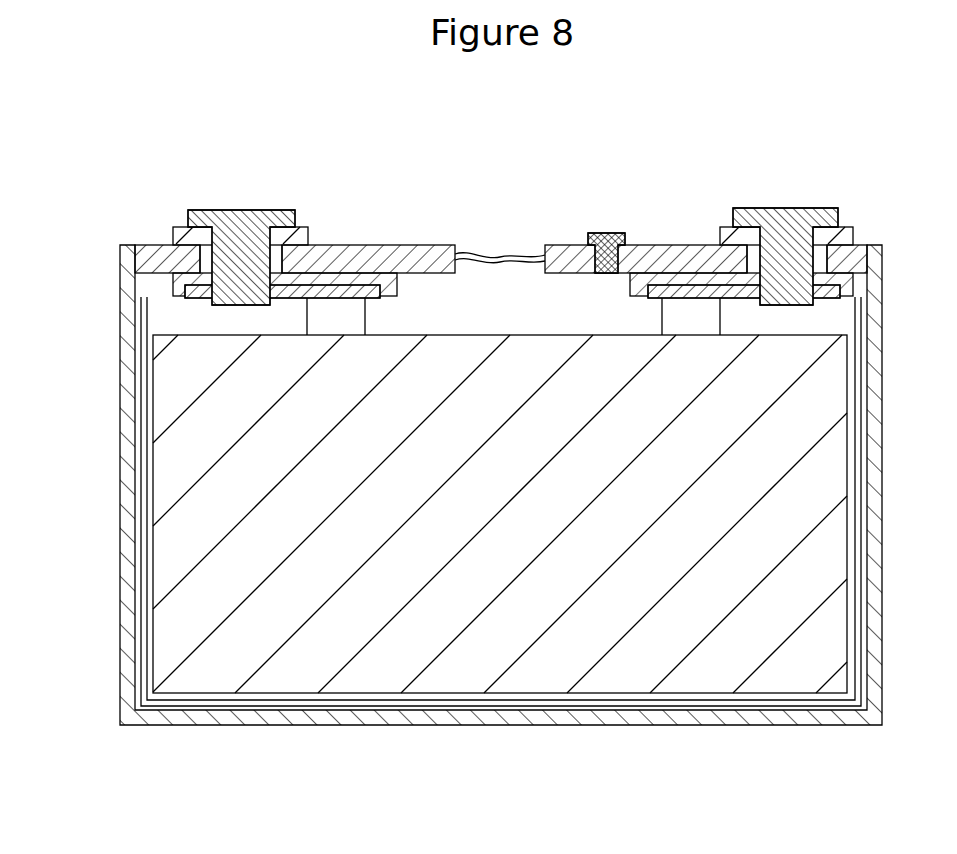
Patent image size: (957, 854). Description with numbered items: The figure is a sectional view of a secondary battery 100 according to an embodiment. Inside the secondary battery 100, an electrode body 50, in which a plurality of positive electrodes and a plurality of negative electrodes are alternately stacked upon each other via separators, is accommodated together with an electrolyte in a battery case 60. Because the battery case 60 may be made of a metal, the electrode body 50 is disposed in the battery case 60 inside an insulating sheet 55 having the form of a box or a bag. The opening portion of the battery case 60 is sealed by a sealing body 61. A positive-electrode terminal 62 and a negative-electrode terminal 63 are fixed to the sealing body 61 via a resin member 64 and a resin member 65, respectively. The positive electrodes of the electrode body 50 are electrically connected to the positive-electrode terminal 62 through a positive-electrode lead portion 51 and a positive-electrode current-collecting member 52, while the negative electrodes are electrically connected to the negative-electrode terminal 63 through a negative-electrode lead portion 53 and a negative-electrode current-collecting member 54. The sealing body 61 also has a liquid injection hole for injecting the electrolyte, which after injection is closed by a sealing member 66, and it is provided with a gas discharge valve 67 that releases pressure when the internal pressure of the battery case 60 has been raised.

The secondary battery 100 is at (882, 176).
The electrode body 50 is at (625, 665).
The positive-electrode lead portion 51 is at (677, 306).
The positive-electrode current-collecting member 52 is at (697, 292).
The negative-electrode lead portion 53 is at (366, 297).
The negative-electrode current-collecting member 54 is at (352, 290).
The insulating sheet 55 is at (862, 531).
The battery case 60 is at (120, 415).
The sealing body 61 is at (423, 246).
The positive-electrode terminal 62 is at (779, 208).
The negative-electrode terminal 63 is at (230, 210).
The resin member 64 is at (725, 228).
The resin member 65 is at (303, 227).
The sealing member 66 is at (600, 233).
The gas discharge valve 67 is at (499, 255).